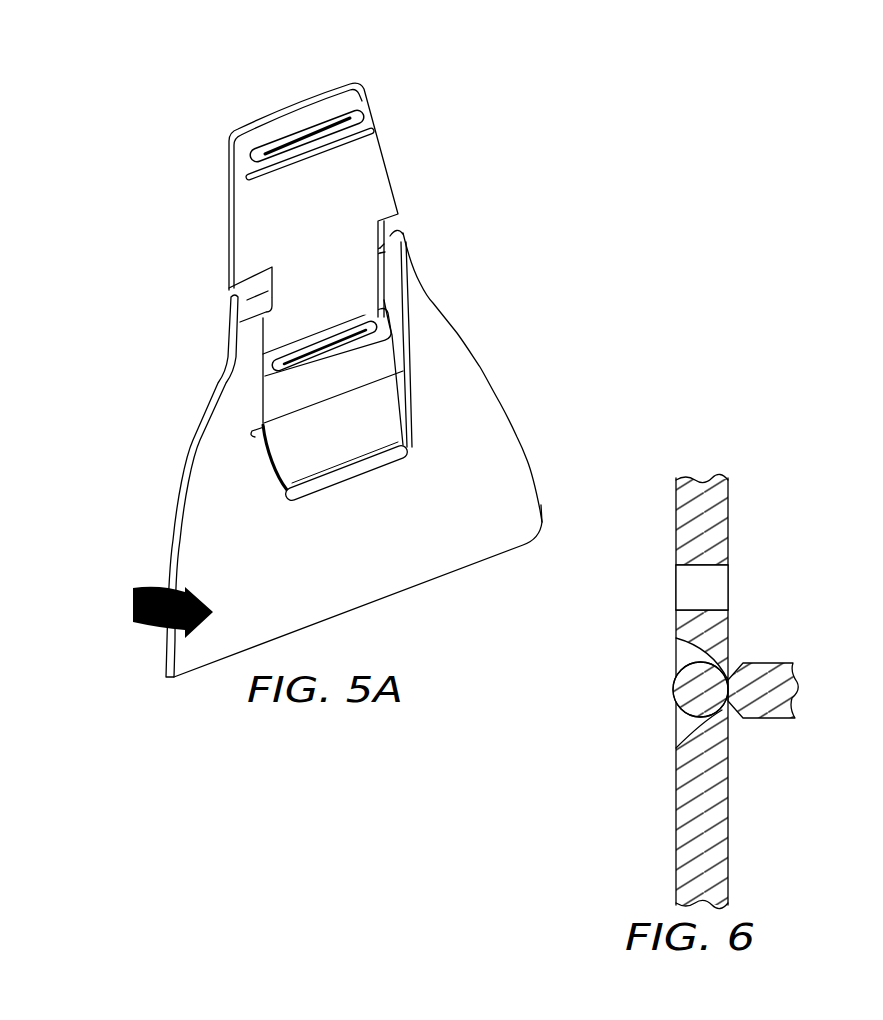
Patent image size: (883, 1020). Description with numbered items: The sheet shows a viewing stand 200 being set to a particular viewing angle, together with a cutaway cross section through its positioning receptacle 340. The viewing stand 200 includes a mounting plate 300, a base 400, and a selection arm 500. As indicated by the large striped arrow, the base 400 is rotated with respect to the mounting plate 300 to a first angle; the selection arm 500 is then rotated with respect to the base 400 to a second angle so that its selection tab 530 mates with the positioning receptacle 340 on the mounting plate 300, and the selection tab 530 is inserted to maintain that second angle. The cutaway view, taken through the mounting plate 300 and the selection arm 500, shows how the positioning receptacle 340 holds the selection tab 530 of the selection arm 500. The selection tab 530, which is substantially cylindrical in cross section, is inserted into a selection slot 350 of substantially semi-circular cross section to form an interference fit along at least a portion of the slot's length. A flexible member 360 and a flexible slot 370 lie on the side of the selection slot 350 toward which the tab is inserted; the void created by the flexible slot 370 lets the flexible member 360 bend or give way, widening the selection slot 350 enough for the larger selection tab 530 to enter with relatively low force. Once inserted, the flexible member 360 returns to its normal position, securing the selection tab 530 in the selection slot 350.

In FIG. 5A, the viewing stand 200 is at (515, 180).
In FIG. 5A, the mounting plate 300 is at (405, 142).
In FIG. 6, the mounting plate 300 is at (717, 539).
In FIG. 5A, the base 400 is at (540, 470).
In FIG. 5A, the selection arm 500 is at (367, 435).
In FIG. 6, the selection arm 500 is at (783, 704).
In FIG. 6, the positioning receptacle 340 is at (742, 633).
In FIG. 6, the selection slot 350 is at (683, 657).
In FIG. 6, the flexible member 360 is at (677, 630).
In FIG. 6, the flexible slot 370 is at (676, 585).
In FIG. 6, the selection tab 530 is at (675, 700).